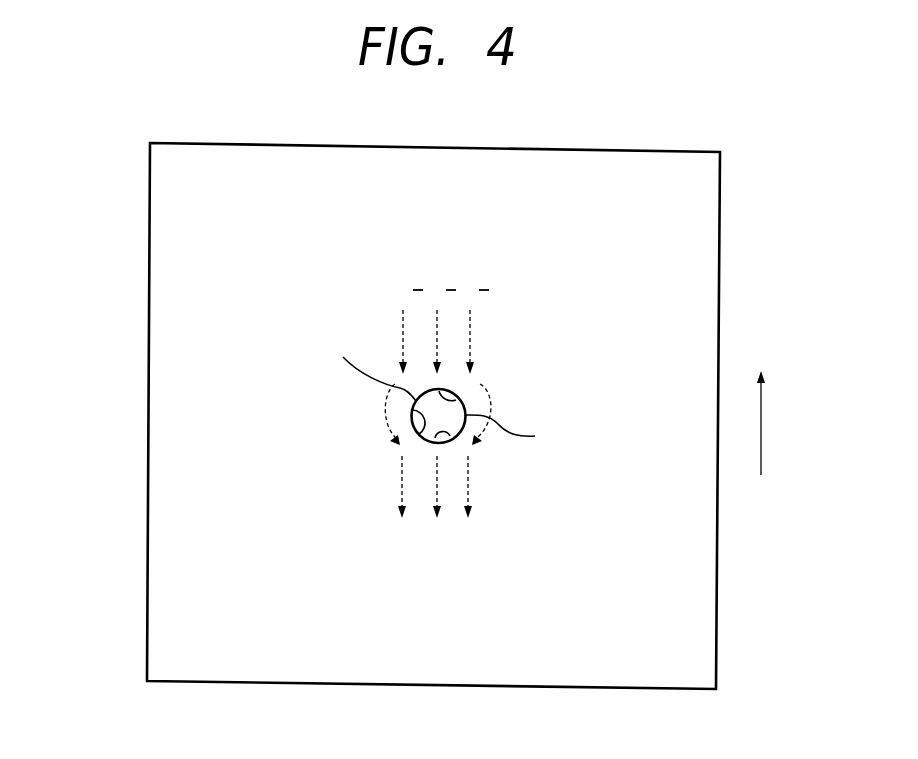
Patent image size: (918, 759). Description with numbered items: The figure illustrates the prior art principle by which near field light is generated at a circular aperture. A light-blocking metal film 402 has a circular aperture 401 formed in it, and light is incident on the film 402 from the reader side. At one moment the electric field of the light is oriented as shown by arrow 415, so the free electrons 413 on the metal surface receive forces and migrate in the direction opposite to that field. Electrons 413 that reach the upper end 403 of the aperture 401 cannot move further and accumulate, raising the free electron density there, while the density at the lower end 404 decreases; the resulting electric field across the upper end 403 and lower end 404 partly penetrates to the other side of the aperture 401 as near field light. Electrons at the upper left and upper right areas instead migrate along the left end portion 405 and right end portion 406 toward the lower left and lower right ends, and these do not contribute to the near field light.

The circular aperture 401 is at (367, 366).
The light-blocking metal film 402 is at (195, 332).
The upper end of the circular aperture 403 is at (457, 397).
The lower end of the circular aperture 404 is at (450, 439).
The left end portion of the circular aperture 405 is at (424, 439).
The right end portion of the circular aperture 406 is at (520, 433).
The electrons 413 is at (471, 333).
The arrow indicating electric field direction 415 is at (761, 444).